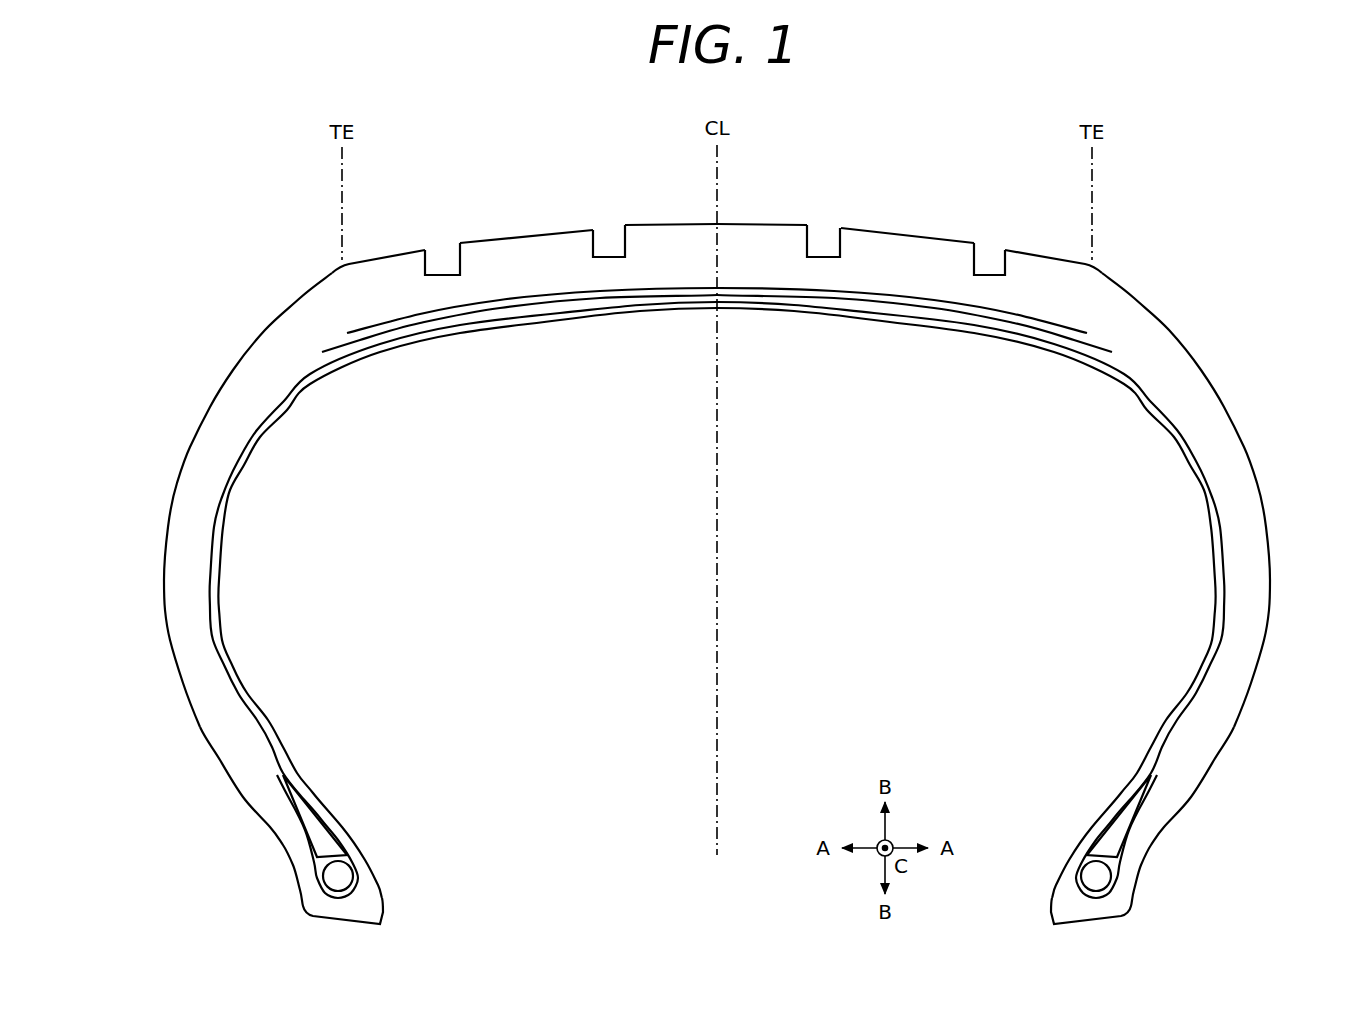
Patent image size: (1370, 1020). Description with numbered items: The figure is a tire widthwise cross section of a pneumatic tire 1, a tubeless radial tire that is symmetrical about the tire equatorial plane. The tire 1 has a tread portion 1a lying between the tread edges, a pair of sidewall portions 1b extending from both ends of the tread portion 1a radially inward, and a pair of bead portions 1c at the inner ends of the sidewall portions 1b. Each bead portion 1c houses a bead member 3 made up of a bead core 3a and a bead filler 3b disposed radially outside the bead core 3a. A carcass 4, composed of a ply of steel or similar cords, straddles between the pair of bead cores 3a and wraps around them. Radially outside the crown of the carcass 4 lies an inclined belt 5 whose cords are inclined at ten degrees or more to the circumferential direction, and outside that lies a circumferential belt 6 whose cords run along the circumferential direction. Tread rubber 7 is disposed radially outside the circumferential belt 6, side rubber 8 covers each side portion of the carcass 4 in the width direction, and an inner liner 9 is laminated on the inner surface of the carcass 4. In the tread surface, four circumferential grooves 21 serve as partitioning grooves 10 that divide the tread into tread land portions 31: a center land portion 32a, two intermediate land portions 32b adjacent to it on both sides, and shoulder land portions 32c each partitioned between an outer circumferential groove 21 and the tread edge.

The pneumatic tire 1 is at (1183, 249).
The tread portion 1a is at (866, 200).
The sidewall portion 1b is at (152, 572).
The bead portion 1c is at (260, 845).
The bead member 3 is at (430, 800).
The bead core 3a is at (340, 877).
The bead filler 3b is at (322, 830).
The carcass 4 is at (212, 622).
The inclined belt 5 is at (1005, 326).
The circumferential belt 6 is at (937, 306).
The tread rubber 7 is at (538, 255).
The side rubber 8 is at (186, 545).
The inner liner 9 is at (258, 718).
The partitioning groove 10 is at (727, 211).
The circumferential groove 21 is at (443, 258).
The tread land portion 31 is at (717, 202).
The center land portion 32a is at (703, 207).
The intermediate land portion 32b is at (517, 225).
The shoulder land portion 32c is at (392, 245).